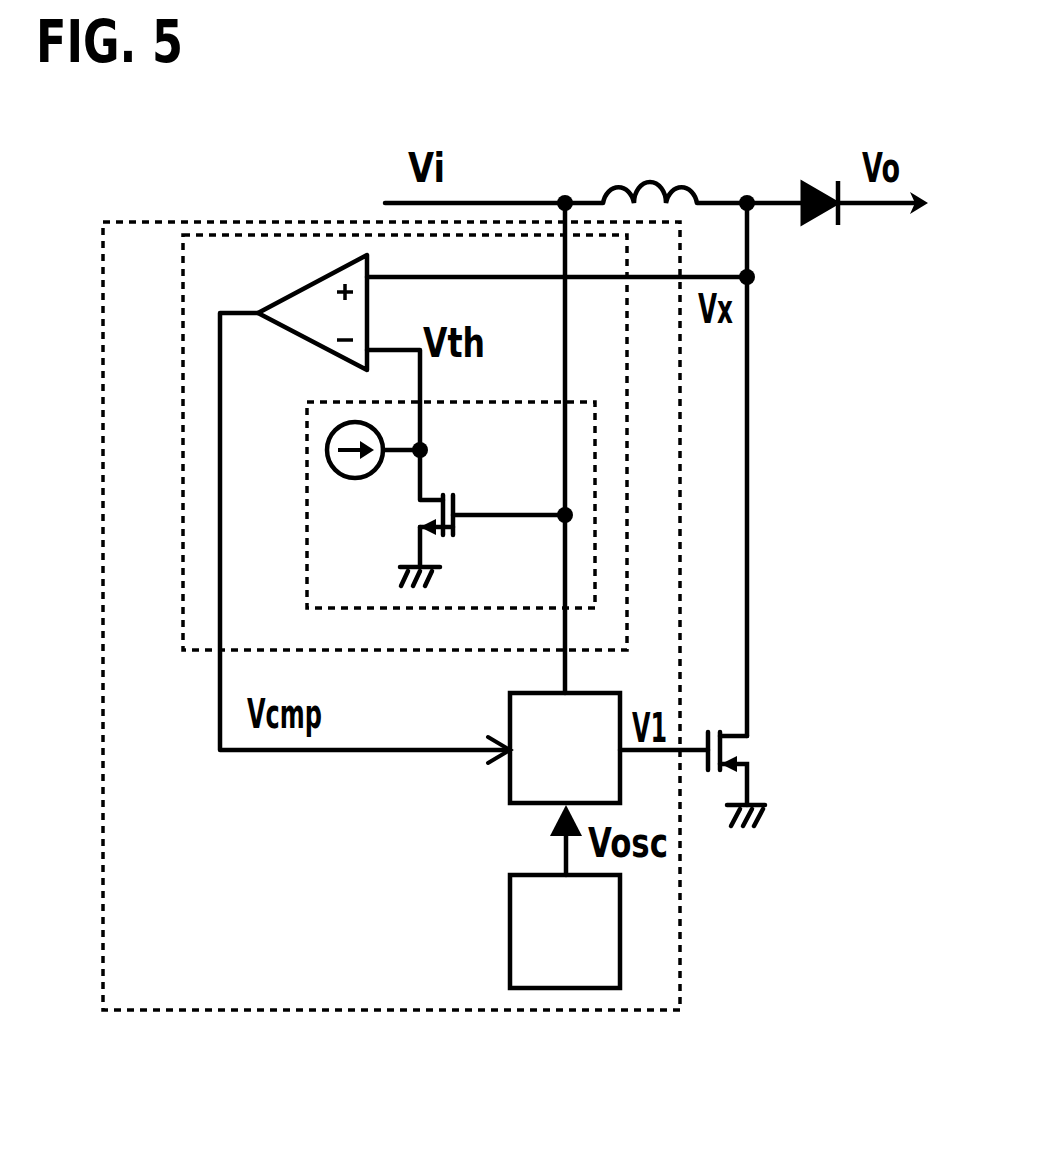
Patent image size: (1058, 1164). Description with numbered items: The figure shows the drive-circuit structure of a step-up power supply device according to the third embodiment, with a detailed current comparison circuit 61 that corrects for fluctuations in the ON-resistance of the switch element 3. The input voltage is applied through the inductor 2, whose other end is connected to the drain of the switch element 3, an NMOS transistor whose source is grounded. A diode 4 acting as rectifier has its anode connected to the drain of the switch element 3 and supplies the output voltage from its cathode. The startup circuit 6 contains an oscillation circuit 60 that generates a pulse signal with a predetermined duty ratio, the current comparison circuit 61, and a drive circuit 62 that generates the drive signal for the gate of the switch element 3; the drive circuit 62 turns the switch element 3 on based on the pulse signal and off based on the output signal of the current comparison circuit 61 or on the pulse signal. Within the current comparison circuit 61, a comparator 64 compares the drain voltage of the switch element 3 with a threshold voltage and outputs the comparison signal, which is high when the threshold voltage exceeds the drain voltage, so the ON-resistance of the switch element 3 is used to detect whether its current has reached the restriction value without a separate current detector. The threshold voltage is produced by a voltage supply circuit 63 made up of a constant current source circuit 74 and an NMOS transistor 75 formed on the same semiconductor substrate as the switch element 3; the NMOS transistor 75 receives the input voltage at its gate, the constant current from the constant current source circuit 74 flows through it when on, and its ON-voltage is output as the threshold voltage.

The inductor 2 is at (665, 188).
The switch element 3 is at (752, 750).
The diode 4 is at (820, 226).
The startup circuit 6 is at (103, 762).
The oscillation circuit 60 is at (510, 892).
The current comparison circuit 61 is at (183, 390).
The drive circuit 62 is at (505, 768).
The voltage supply circuit 63 is at (305, 517).
The comparator 64 is at (307, 343).
The constant current source circuit 74 is at (362, 480).
The NMOS transistor 75 is at (457, 507).